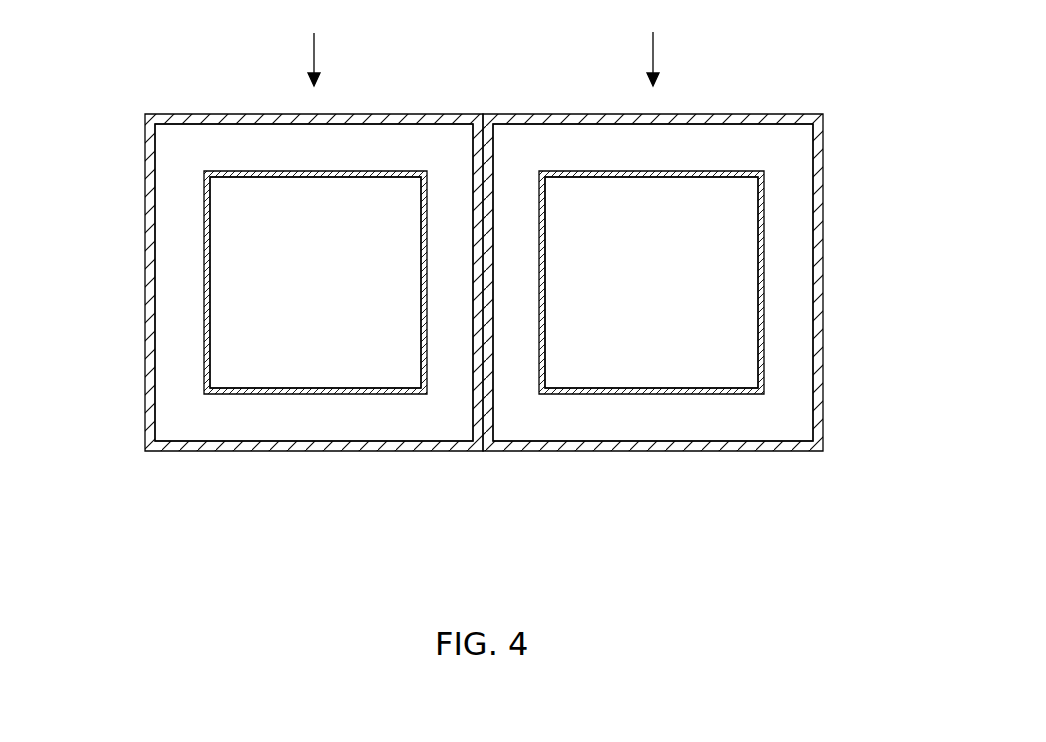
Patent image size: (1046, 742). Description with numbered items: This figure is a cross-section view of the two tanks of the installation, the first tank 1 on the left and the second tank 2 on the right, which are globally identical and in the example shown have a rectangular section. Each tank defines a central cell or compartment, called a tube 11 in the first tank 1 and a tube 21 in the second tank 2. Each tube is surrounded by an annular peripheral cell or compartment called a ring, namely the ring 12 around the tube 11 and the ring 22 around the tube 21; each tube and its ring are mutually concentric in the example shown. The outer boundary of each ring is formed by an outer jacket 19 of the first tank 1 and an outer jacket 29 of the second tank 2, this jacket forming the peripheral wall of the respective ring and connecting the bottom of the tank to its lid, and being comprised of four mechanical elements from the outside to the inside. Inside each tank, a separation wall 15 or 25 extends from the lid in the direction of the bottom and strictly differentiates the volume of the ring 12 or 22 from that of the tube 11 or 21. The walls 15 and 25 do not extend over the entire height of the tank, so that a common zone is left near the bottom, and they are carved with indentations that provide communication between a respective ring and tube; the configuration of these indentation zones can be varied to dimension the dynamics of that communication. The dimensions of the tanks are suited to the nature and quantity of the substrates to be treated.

The first tank 1 is at (305, 59).
The second tank 2 is at (645, 59).
The tube 11 is at (275, 327).
The ring 12 is at (248, 421).
The separation wall 15 is at (207, 215).
The outer jacket 19 is at (318, 447).
The tube 21 is at (697, 224).
The ring 22 is at (755, 416).
The separation wall 25 is at (764, 317).
The outer jacket 29 is at (645, 448).